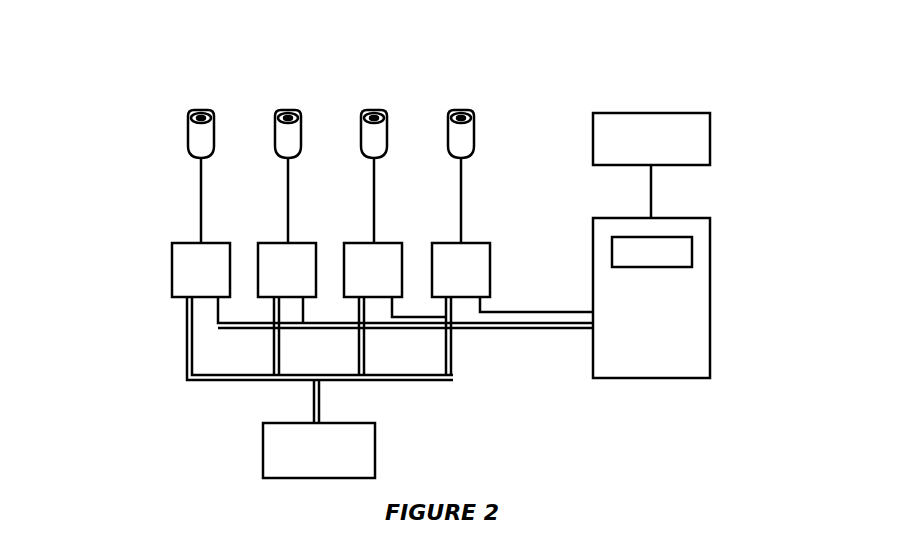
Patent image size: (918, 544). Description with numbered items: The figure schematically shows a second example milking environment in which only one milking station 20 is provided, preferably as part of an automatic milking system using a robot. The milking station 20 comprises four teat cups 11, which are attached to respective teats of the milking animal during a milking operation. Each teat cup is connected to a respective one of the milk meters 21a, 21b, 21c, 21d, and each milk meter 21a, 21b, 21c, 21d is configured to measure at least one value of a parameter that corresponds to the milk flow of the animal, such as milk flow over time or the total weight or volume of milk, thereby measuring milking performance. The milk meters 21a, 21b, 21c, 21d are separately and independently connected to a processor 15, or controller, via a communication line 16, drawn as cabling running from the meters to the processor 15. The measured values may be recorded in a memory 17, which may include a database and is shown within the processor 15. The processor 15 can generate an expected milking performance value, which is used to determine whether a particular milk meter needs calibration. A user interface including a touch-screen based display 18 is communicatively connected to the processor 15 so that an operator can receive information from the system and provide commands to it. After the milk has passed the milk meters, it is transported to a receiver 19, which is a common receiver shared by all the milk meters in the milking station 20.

The milking station 20 is at (143, 73).
The teat cups 11 is at (188, 141).
The milk meter 21a is at (192, 267).
The milk meter 21b is at (270, 251).
The milk meter 21c is at (356, 260).
The milk meter 21d is at (472, 258).
The communication line 16 is at (540, 312).
The processor 15 is at (693, 330).
The memory 17 is at (681, 254).
The touch-screen based display 18 is at (688, 146).
The receiver 19 is at (294, 446).